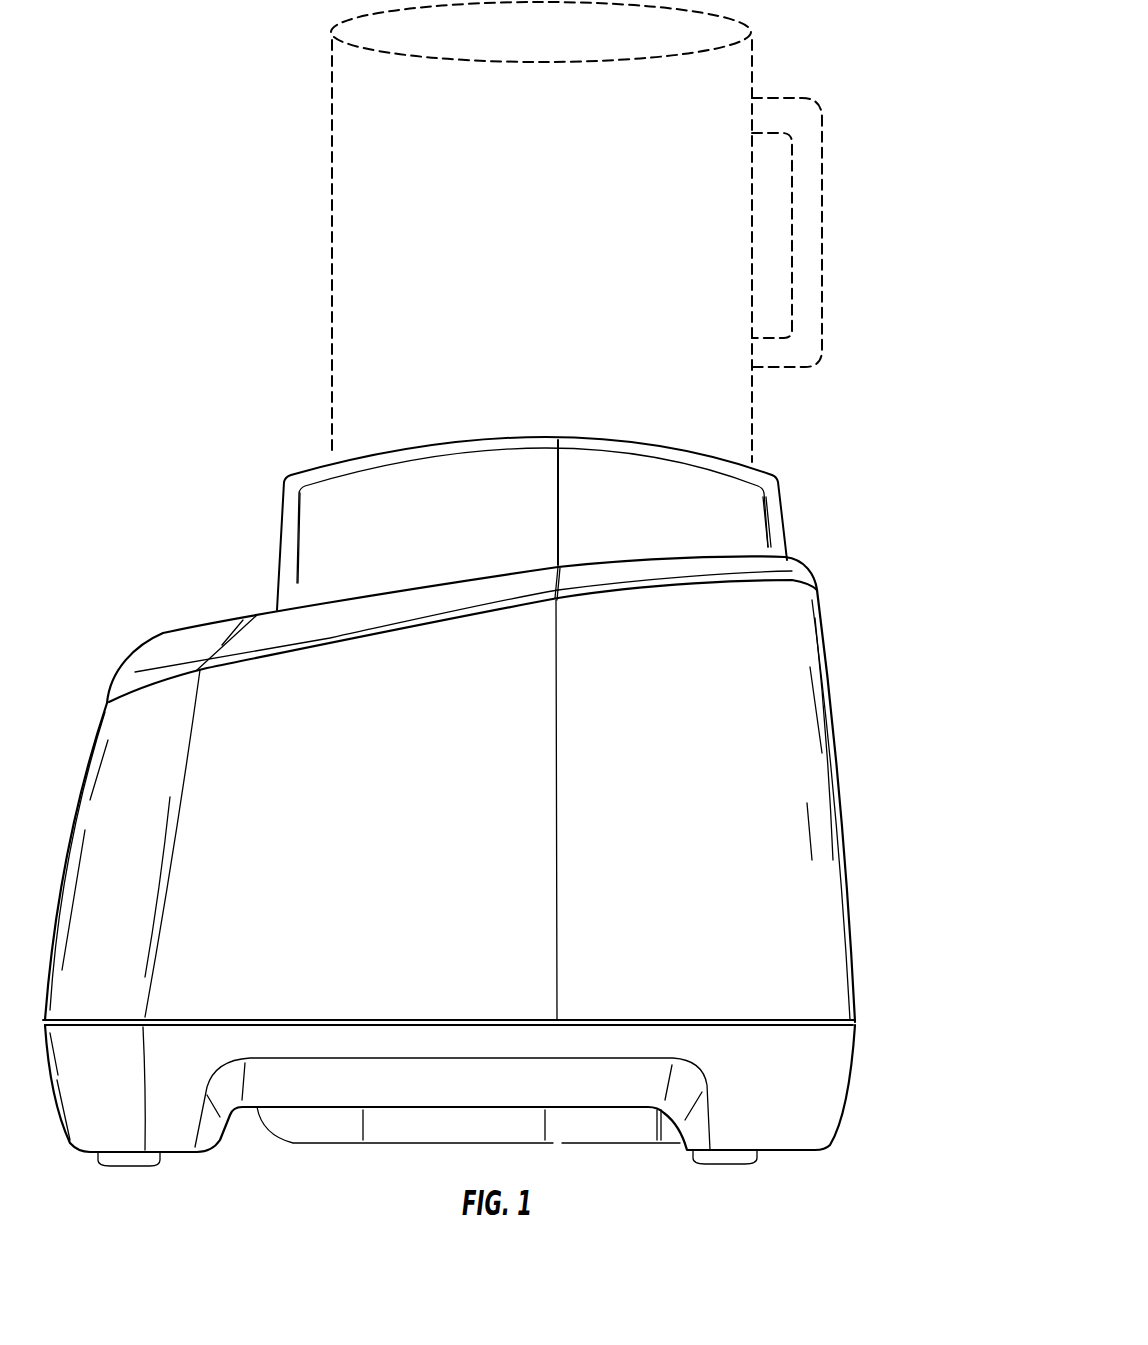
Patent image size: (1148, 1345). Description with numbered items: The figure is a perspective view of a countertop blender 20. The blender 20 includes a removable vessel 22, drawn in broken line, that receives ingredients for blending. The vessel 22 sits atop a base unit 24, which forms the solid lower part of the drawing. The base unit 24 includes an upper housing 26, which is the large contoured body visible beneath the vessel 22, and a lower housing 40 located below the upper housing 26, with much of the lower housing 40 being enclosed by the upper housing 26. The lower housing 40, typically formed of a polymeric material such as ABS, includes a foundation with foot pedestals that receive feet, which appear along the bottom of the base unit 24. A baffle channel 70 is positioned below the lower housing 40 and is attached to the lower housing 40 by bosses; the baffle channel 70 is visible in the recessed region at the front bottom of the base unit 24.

The countertop blender 20 is at (502, 611).
The removable vessel 22 is at (760, 73).
The base unit 24 is at (502, 828).
The upper housing 26 is at (810, 763).
The lower housing 40 is at (835, 1072).
The baffle channel 70 is at (585, 1130).